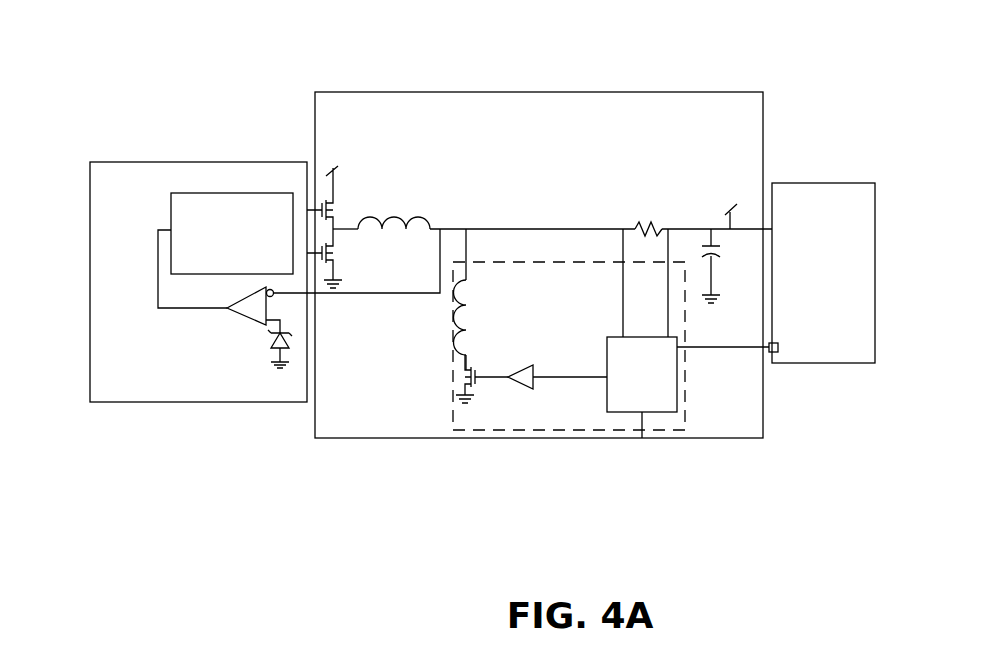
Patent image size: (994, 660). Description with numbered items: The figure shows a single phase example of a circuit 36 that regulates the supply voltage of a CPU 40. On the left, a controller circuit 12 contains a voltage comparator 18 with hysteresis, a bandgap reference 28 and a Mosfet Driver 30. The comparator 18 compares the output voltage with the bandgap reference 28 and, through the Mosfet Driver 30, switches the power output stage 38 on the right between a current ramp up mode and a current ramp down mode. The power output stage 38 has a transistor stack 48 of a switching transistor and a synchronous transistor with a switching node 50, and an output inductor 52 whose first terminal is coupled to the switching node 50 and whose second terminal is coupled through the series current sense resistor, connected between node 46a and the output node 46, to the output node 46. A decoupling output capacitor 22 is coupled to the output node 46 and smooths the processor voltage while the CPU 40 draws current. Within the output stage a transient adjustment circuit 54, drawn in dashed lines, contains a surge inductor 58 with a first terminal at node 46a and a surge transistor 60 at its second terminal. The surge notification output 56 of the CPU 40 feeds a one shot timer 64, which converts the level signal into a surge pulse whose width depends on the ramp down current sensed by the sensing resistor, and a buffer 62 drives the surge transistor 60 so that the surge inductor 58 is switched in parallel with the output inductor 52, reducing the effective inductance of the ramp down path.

The controller circuit 12 is at (174, 246).
The voltage comparator 18 is at (243, 313).
The output capacitor 22 is at (728, 267).
The bandgap reference 28 is at (268, 347).
The Mosfet Driver 30 is at (196, 193).
The circuit 36 is at (554, 265).
The power output stage 38 is at (318, 440).
The CPU 40 is at (838, 216).
The output node 46 is at (746, 228).
The node 46a is at (603, 228).
The transistor stack 48 is at (390, 200).
The switching node 50 is at (337, 235).
The output inductor 52 is at (417, 225).
The transient adjustment circuit 54 is at (478, 432).
The surge notification output 56 is at (778, 348).
The surge inductor 58 is at (455, 308).
The surge transistor 60 is at (462, 388).
The buffer 62 is at (536, 385).
The one shot timer circuit 64 is at (643, 440).